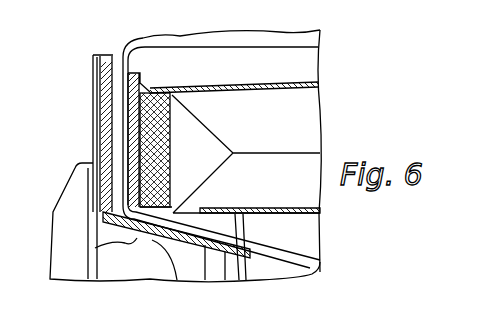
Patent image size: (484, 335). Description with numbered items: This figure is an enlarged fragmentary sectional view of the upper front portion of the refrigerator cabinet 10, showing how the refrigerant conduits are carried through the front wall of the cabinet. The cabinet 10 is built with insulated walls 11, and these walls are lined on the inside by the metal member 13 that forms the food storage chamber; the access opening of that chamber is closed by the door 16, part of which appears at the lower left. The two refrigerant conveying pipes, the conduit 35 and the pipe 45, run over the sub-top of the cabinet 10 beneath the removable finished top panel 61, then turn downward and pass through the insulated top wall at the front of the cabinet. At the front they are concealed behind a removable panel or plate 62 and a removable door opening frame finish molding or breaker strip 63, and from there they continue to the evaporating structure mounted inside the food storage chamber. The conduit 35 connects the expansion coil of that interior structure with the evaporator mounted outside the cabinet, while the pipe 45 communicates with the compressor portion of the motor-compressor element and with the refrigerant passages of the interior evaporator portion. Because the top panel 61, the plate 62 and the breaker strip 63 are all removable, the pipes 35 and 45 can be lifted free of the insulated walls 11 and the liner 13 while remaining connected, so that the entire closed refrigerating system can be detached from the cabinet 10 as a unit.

The cabinet 10 is at (59, 144).
The insulated walls 11 is at (297, 152).
The metal member 13 is at (293, 214).
The door 16 is at (68, 208).
The conduit 35 is at (113, 56).
The conduit or pipe 45 is at (143, 42).
The removable finished top panel 61 is at (272, 47).
The removable panel or plate 62 is at (93, 95).
The door opening frame finish molding or breaker strip 63 is at (96, 247).